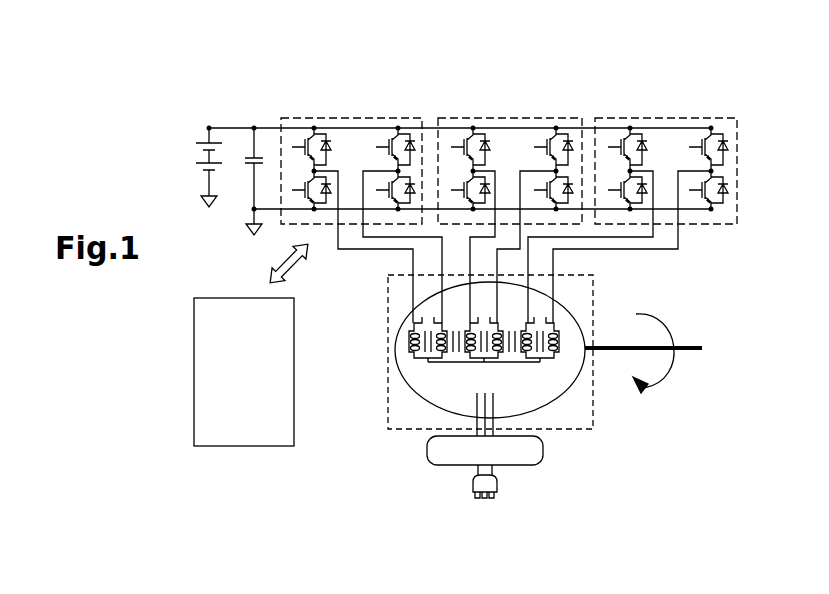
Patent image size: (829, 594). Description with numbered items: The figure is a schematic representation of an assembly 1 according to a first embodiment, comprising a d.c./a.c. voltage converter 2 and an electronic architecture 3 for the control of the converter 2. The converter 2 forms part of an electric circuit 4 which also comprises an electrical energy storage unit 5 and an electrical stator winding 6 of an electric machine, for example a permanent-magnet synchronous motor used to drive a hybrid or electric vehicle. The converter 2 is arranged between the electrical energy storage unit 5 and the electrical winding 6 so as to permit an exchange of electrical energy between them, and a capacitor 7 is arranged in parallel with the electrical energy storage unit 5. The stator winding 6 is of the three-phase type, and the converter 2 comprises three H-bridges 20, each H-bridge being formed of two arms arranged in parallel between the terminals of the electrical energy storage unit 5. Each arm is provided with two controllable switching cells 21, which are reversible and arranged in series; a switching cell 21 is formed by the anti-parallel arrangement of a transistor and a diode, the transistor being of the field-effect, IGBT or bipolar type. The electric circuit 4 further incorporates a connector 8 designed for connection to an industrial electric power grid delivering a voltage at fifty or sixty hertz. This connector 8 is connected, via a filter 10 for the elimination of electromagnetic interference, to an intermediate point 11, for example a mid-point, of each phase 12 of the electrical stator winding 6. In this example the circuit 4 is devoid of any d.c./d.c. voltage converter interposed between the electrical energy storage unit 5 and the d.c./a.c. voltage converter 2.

The assembly 1 is at (288, 46).
The d.c./a.c. voltage converter 2 is at (611, 118).
The electronic architecture 3 is at (223, 298).
The electric circuit 4 is at (754, 173).
The electrical energy storage unit 5 is at (193, 152).
The electrical stator winding 6 is at (552, 412).
The capacitor 7 is at (250, 152).
The connector 8 is at (497, 482).
The filter 10 is at (545, 458).
The intermediate point 11 is at (418, 360).
The phase 12 is at (428, 318).
The H-bridge 20 is at (389, 118).
The controllable switching cell 21 is at (378, 178).